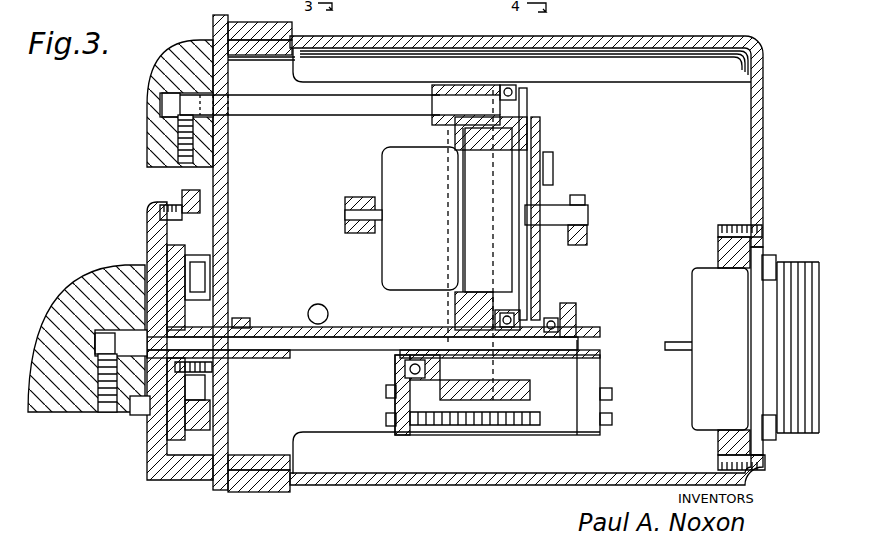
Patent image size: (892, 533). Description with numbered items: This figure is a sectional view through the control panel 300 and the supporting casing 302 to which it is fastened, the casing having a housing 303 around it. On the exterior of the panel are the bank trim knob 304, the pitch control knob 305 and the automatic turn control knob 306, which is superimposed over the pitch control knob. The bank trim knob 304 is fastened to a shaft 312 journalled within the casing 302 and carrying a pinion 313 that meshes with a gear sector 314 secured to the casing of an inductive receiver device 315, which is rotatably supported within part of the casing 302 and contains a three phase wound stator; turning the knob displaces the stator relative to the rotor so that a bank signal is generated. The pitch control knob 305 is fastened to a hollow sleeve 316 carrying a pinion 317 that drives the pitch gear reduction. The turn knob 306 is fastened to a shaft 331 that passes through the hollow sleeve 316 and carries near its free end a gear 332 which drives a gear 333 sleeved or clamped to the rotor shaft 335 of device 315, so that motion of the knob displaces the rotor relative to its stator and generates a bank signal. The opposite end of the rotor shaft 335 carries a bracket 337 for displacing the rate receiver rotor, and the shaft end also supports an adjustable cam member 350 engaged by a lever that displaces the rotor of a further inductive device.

The control panel 300 is at (214, 30).
The supporting casing 302 is at (292, 488).
The housing 303 is at (465, 488).
The bank trim knob 304 is at (163, 72).
The pitch control knob 305 is at (148, 226).
The automatic turn control knob 306 is at (72, 402).
The shaft 312 is at (271, 103).
The pinion 313 is at (521, 96).
The gear sector 314 is at (536, 130).
The inductive receiver device 315 is at (447, 245).
The hollow sleeve 316 is at (215, 362).
The pinion 317 is at (238, 318).
The shaft 331 is at (318, 338).
The gear 332 is at (510, 318).
The gear 333 is at (548, 312).
The rotor shaft 335 is at (589, 213).
The bracket 337 is at (356, 227).
The cam member 350 is at (548, 166).